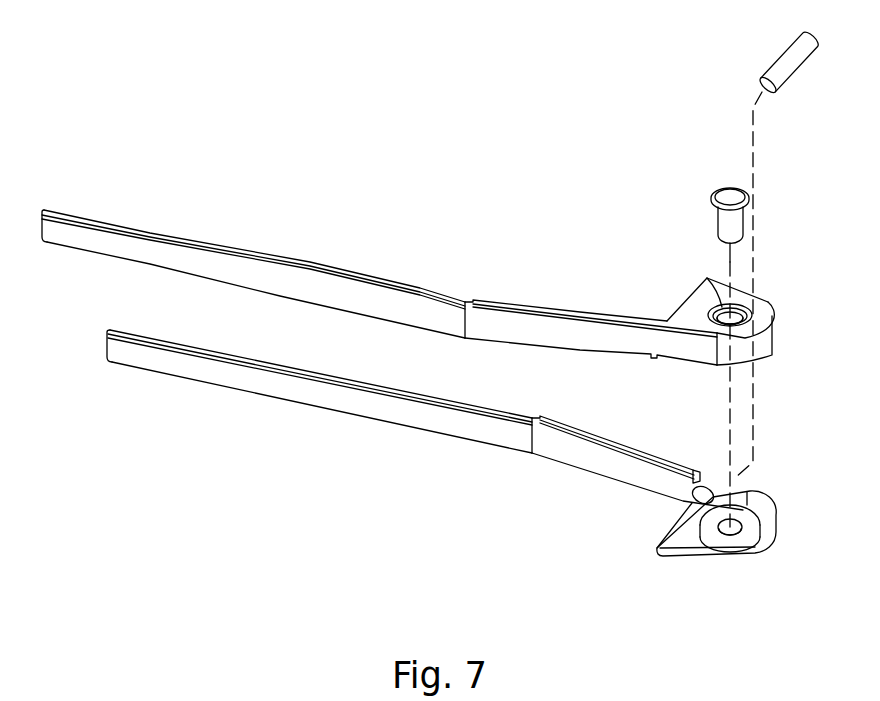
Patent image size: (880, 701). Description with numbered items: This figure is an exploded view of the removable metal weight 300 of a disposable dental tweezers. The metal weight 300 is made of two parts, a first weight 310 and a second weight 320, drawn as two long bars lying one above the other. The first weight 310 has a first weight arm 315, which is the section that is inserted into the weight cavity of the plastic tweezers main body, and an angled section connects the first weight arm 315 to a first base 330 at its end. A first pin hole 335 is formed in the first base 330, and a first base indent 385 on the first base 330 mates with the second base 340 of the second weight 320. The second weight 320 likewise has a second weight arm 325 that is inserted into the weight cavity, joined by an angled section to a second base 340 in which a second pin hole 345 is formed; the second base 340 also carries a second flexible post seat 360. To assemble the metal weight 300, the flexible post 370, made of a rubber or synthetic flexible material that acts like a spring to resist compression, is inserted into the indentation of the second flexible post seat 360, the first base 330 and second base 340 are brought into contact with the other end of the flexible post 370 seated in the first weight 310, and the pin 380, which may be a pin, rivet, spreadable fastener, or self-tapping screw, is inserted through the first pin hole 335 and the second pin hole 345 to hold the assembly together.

The metal weight 300 is at (372, 150).
The first weight 310 is at (513, 322).
The first weight arm 315 is at (163, 252).
The second weight 320 is at (577, 458).
The second weight arm 325 is at (292, 388).
The first base 330 is at (675, 307).
The first pin hole 335 is at (702, 282).
The second base 340 is at (688, 535).
The second pin hole 345 is at (732, 530).
The second flexible post seat 360 is at (690, 501).
The flexible post 370 is at (780, 63).
The pin 380 is at (727, 197).
The first base indent 385 is at (655, 358).